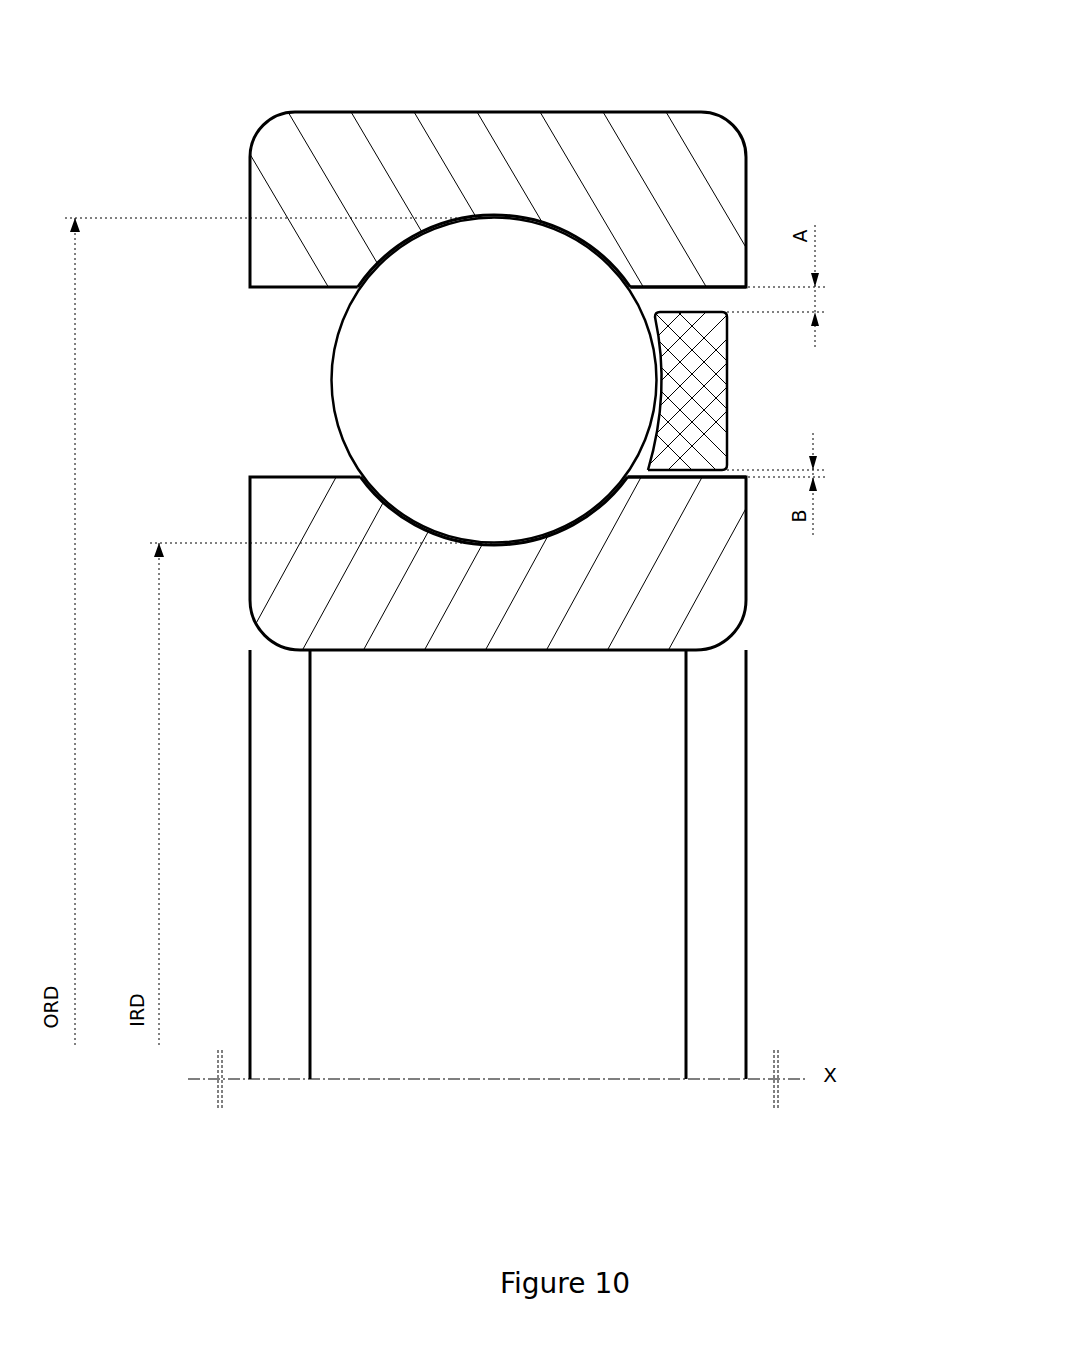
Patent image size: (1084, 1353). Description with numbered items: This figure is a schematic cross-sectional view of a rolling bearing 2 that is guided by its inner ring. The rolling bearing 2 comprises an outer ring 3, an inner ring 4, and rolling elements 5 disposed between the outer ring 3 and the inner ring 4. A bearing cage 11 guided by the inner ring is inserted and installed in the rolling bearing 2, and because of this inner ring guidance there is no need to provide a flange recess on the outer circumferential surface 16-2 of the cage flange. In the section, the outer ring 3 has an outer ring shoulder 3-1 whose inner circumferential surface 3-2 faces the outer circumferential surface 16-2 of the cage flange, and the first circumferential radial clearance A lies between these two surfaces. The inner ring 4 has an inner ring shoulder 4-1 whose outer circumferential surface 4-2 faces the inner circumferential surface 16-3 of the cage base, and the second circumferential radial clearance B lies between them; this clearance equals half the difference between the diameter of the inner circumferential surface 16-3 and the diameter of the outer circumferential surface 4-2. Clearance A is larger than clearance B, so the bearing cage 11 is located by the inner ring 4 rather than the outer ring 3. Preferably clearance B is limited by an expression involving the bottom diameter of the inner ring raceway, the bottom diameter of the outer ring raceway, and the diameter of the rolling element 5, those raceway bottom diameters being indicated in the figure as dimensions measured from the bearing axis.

The rolling bearing 2 is at (830, 88).
The outer ring 3 is at (712, 150).
The outer ring shoulder 3-1 is at (703, 225).
The inner circumferential surface of the outer ring shoulder 3-2 is at (606, 230).
The inner ring 4 is at (410, 627).
The inner ring shoulder 4-1 is at (565, 624).
The outer circumferential surface of the inner ring shoulder 4-2 is at (672, 482).
The rolling elements 5 is at (430, 397).
The bearing cage 11 is at (700, 402).
The outer circumferential surface of the cage flange 16-2 is at (697, 310).
The inner circumferential surface of the cage base 16-3 is at (722, 463).